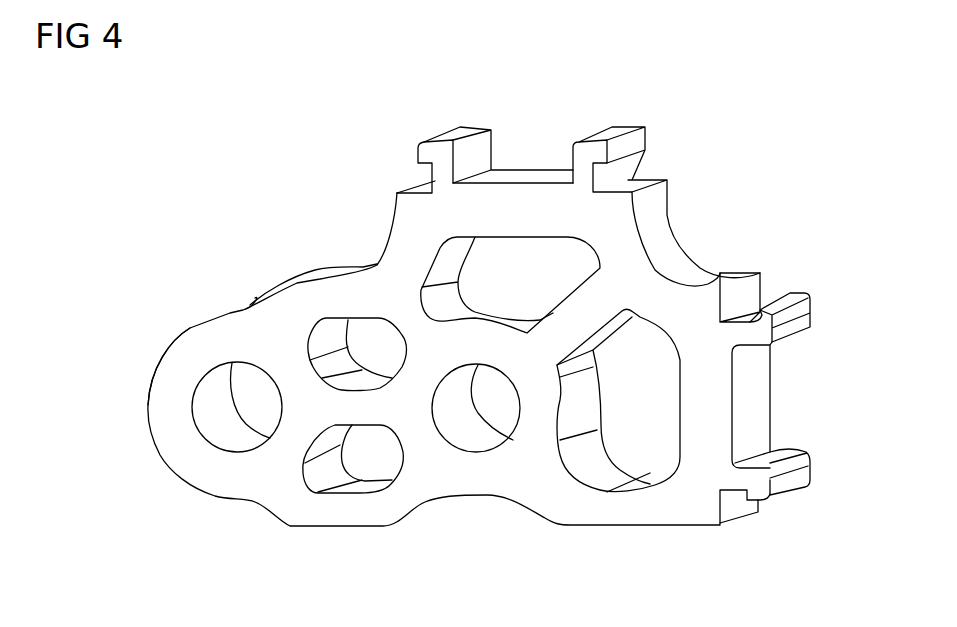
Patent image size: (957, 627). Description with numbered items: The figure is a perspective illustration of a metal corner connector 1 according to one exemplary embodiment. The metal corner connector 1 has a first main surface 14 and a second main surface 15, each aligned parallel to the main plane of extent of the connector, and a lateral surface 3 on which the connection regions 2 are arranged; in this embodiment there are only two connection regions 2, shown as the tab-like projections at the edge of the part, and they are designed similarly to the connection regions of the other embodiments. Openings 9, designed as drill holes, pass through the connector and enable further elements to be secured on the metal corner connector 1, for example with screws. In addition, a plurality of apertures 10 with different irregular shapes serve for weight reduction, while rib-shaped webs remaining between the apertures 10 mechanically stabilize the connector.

The metal corner connector 1 is at (754, 189).
The connection regions 2 is at (540, 110).
The lateral surface 3 is at (337, 275).
The openings 9 is at (257, 416).
The apertures 10 is at (368, 345).
The first main surface 14 is at (165, 377).
The second main surface 15 is at (250, 300).